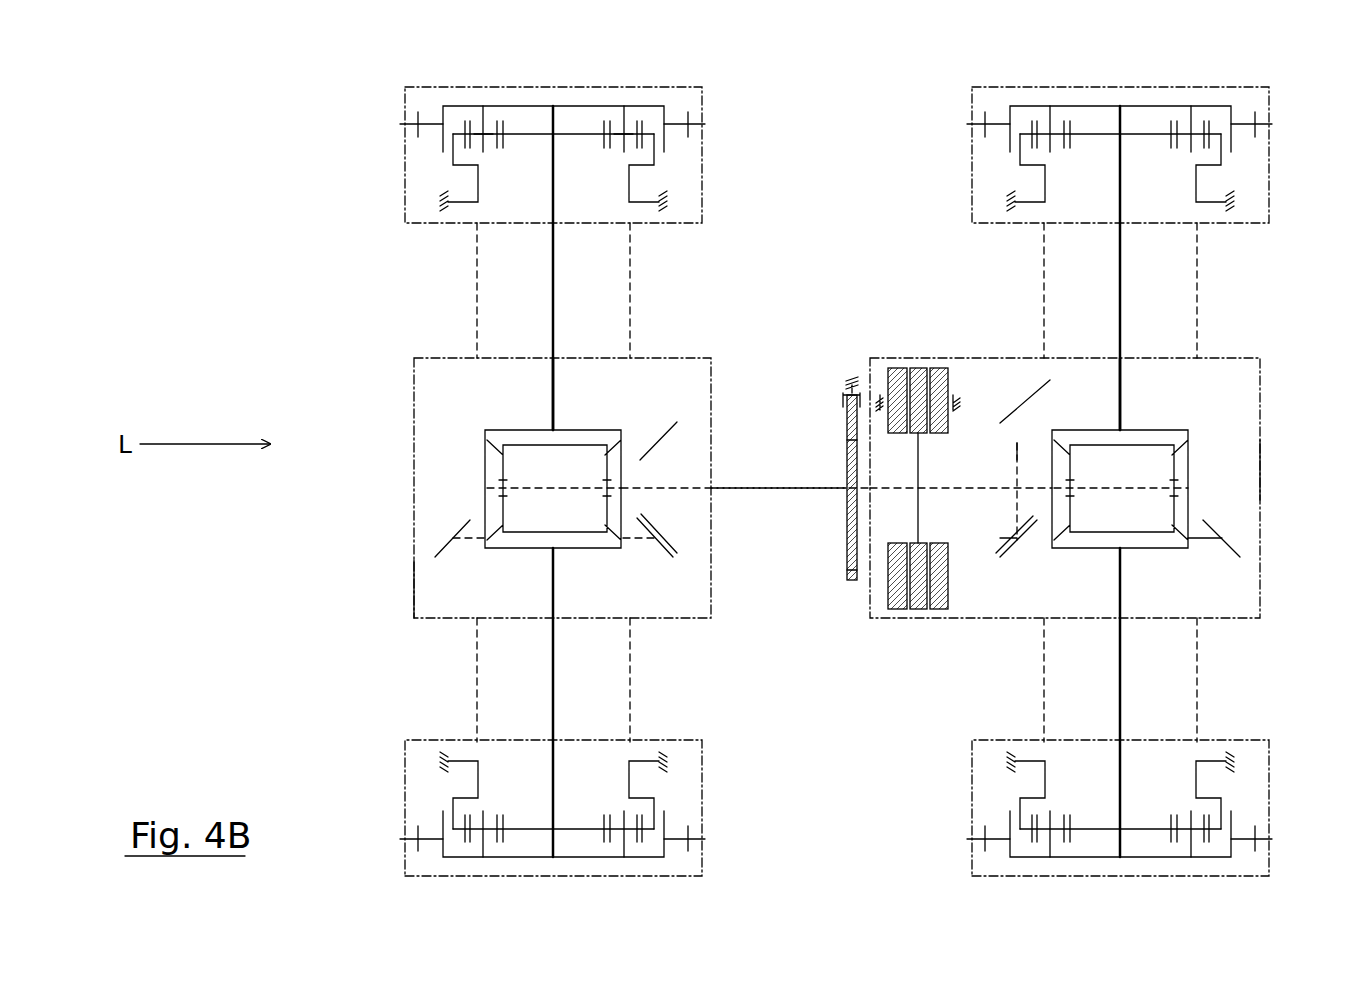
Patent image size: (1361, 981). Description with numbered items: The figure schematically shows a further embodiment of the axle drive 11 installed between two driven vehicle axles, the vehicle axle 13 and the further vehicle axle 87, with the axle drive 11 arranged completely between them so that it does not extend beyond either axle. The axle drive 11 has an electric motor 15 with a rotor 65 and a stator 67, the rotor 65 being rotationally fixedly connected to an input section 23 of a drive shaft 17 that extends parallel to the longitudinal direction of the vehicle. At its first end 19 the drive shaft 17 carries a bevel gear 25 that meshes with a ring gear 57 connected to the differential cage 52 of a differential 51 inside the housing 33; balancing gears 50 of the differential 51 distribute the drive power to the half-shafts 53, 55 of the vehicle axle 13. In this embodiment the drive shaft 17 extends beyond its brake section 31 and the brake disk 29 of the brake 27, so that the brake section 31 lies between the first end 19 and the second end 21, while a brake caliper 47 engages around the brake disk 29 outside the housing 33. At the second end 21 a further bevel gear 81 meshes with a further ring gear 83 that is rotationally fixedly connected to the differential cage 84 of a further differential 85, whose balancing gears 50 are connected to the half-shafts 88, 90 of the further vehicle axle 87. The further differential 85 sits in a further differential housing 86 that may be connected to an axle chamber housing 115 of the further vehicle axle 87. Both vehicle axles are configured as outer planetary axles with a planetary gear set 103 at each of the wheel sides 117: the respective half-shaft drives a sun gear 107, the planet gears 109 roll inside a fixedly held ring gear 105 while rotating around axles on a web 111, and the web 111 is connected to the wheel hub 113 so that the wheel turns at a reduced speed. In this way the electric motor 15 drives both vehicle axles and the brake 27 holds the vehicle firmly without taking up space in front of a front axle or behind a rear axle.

The axle drive 11 is at (840, 340).
The vehicle axle 13 is at (1122, 318).
The electric motor 15 is at (928, 445).
The drive shaft 17 is at (950, 490).
The first end 19 is at (1017, 490).
The second end 21 is at (660, 490).
The input section 23 is at (917, 490).
The bevel gear 25 is at (1005, 435).
The brake 27 is at (830, 588).
The brake disk 29 is at (847, 513).
The brake section 31 is at (847, 490).
The housing 33 is at (1262, 358).
The brake caliper 47 is at (845, 401).
The balancing gears 50 is at (510, 468).
The differential 51 is at (1218, 470).
The differential cage 52 is at (1088, 548).
The half-shaft 53 is at (1120, 395).
The half-shaft 55 is at (1120, 585).
The ring gear 57 is at (1020, 540).
The rotor 65 is at (918, 375).
The stator 67 is at (897, 380).
The further bevel gear 81 is at (668, 435).
The further ring gear 83 is at (652, 548).
The differential cage 84 is at (600, 548).
The further differential 85 is at (430, 500).
The further differential housing 86 is at (415, 590).
The further vehicle axle 87 is at (548, 298).
The half-shaft 88 is at (557, 325).
The half-shaft 90 is at (552, 683).
The planetary gear set 103 is at (547, 84).
The ring gear 105 is at (640, 128).
The sun gear 107 is at (603, 138).
The planet gears 109 is at (493, 136).
The web 111 is at (462, 106).
The wheel hub 113 is at (420, 122).
The axle chamber housing 115 is at (477, 257).
The wheel sides 117 is at (705, 125).